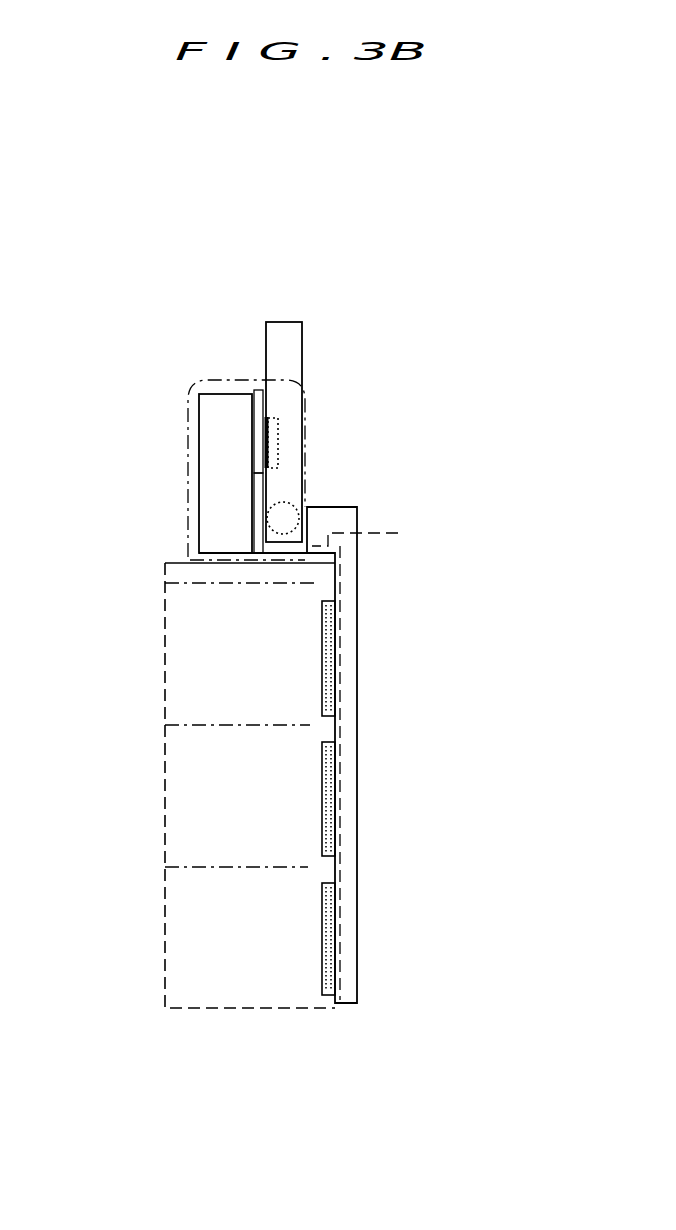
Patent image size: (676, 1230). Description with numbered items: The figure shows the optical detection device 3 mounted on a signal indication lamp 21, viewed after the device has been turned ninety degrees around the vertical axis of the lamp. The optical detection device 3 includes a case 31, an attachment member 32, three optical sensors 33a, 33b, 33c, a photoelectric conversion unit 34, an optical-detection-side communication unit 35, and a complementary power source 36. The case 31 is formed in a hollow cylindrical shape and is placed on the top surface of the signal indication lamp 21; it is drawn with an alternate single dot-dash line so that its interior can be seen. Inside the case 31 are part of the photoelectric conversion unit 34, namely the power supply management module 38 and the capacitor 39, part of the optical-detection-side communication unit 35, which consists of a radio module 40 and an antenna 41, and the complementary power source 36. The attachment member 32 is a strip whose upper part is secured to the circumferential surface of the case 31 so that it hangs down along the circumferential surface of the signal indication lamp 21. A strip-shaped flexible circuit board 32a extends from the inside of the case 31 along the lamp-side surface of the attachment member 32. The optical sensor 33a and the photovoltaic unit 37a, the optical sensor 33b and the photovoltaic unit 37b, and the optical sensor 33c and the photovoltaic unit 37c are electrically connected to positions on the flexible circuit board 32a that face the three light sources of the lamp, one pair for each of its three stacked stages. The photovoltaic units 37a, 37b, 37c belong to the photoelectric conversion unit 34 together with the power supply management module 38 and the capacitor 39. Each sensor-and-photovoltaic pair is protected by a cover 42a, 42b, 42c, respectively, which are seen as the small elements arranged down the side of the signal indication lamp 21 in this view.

The optical detection device 3 is at (327, 284).
The signal indication lamp 21 is at (202, 1008).
The case 31 is at (203, 383).
The attachment member 32 is at (263, 503).
The flexible circuit board 32a is at (380, 762).
The optical sensor 33a is at (320, 617).
The optical sensor 33b is at (320, 762).
The optical sensor 33c is at (320, 903).
The photoelectric conversion unit 34 is at (483, 433).
The optical-detection-side communication unit 35 is at (91, 435).
The complementary power source 36 is at (223, 402).
The photovoltaic unit 37a is at (337, 655).
The photovoltaic unit 37b is at (337, 796).
The photovoltaic unit 37c is at (337, 938).
The power supply management module 38 is at (258, 442).
The capacitor 39 is at (278, 435).
The radio module 40 is at (262, 497).
The antenna 41 is at (280, 487).
The cover 42a is at (330, 600).
The cover 42b is at (330, 741).
The cover 42c is at (330, 872).